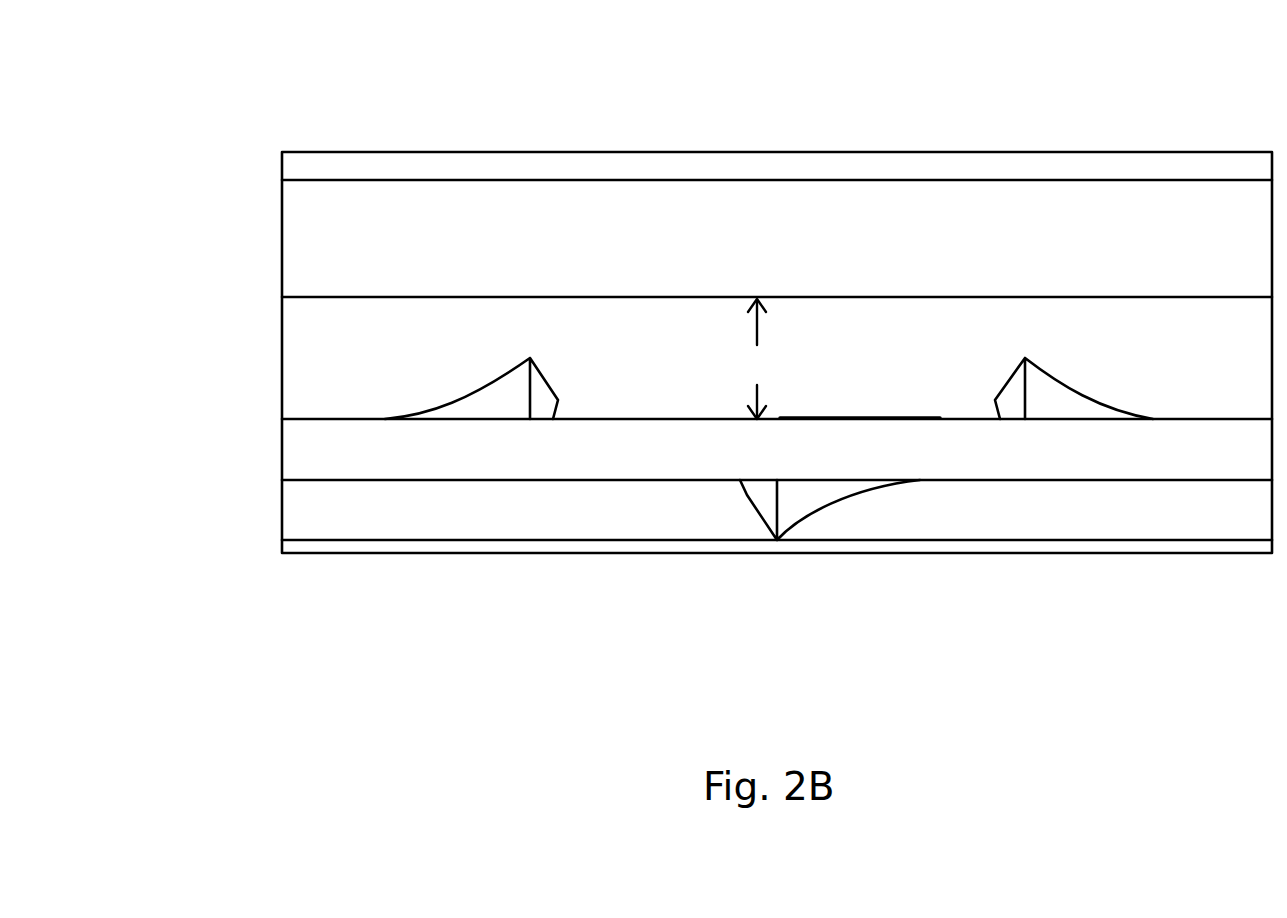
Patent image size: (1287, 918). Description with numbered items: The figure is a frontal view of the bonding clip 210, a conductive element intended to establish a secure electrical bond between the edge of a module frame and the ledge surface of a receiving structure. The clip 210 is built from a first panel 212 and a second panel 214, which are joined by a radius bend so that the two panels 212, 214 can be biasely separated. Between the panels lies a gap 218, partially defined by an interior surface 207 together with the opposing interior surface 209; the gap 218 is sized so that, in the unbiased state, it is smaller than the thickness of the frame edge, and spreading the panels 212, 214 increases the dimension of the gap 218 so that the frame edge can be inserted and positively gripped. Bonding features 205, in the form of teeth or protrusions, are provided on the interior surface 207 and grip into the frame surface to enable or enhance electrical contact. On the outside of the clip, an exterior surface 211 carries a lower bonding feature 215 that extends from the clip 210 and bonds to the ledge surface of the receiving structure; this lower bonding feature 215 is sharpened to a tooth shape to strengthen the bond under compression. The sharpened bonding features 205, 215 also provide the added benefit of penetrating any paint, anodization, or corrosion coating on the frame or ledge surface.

The bonding clip 210 is at (342, 567).
The first panel 212 is at (453, 212).
The interior surface 209 is at (633, 299).
The second panel 214 is at (505, 502).
The exterior surface 211 is at (612, 478).
The bonding feature 205 is at (510, 390).
The interior surface 207 is at (622, 418).
The gap 218 is at (764, 359).
The lower bonding feature 215 is at (807, 500).